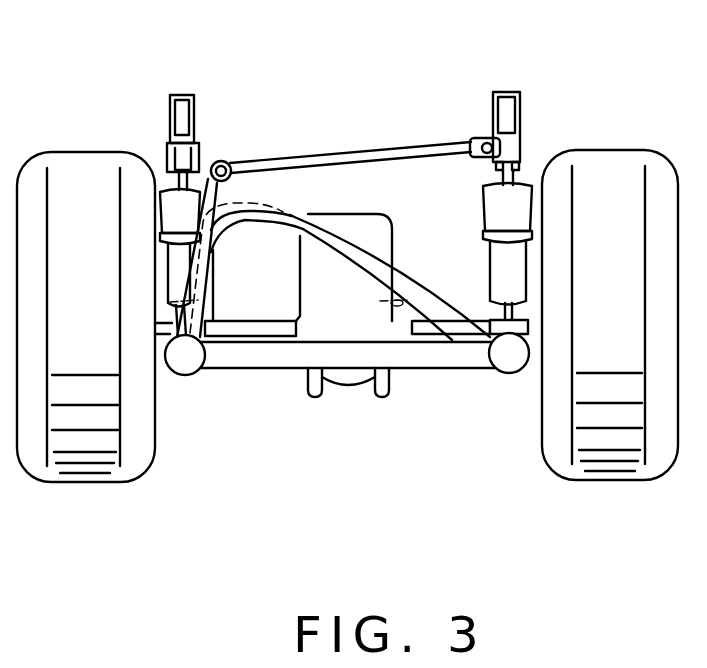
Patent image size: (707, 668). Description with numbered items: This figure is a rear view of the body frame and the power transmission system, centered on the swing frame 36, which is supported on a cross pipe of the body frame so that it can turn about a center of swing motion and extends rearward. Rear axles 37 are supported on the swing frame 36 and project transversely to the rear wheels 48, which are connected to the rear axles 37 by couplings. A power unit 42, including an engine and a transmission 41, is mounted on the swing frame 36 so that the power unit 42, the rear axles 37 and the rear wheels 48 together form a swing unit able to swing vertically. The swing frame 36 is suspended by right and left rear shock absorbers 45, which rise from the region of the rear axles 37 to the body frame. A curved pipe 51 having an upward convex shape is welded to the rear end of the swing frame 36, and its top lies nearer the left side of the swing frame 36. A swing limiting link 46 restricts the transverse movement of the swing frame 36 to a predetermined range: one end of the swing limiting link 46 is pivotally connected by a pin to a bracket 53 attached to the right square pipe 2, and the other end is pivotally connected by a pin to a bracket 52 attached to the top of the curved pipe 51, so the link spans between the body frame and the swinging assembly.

The right square pipe 2 is at (183, 93).
The swing frame 36 is at (182, 368).
The rear axles 37 is at (247, 335).
The transmission 41 is at (342, 313).
The power unit 42 is at (333, 196).
The rear shock absorbers 45 is at (174, 208).
The swing limiting link 46 is at (376, 146).
The rear wheels 48 is at (87, 463).
The curved pipe 51 is at (423, 302).
The bracket 52 is at (261, 193).
The bracket 53 is at (472, 139).